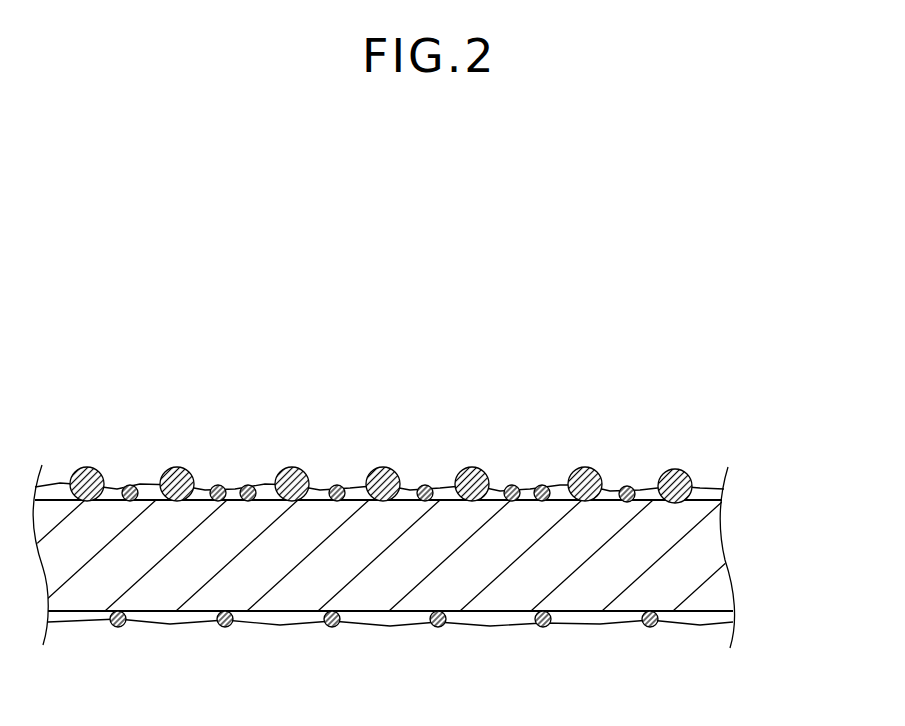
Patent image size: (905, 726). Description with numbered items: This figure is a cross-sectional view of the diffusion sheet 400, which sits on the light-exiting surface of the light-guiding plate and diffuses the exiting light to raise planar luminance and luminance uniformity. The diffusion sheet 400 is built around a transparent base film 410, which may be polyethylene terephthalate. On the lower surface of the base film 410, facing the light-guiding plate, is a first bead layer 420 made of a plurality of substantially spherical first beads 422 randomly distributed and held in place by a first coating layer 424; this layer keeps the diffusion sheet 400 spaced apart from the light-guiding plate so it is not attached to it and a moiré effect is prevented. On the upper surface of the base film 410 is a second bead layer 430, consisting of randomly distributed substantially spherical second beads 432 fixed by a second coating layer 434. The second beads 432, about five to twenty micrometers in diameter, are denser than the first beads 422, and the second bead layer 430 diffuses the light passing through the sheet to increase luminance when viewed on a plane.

The diffusion sheet 400 is at (385, 376).
The base film 410 is at (718, 557).
The first bead layer 420 is at (426, 649).
The first beads 422 is at (542, 626).
The first coating layer 424 is at (618, 622).
The second bead layer 430 is at (420, 461).
The second beads 432 is at (672, 476).
The second coating layer 434 is at (560, 488).